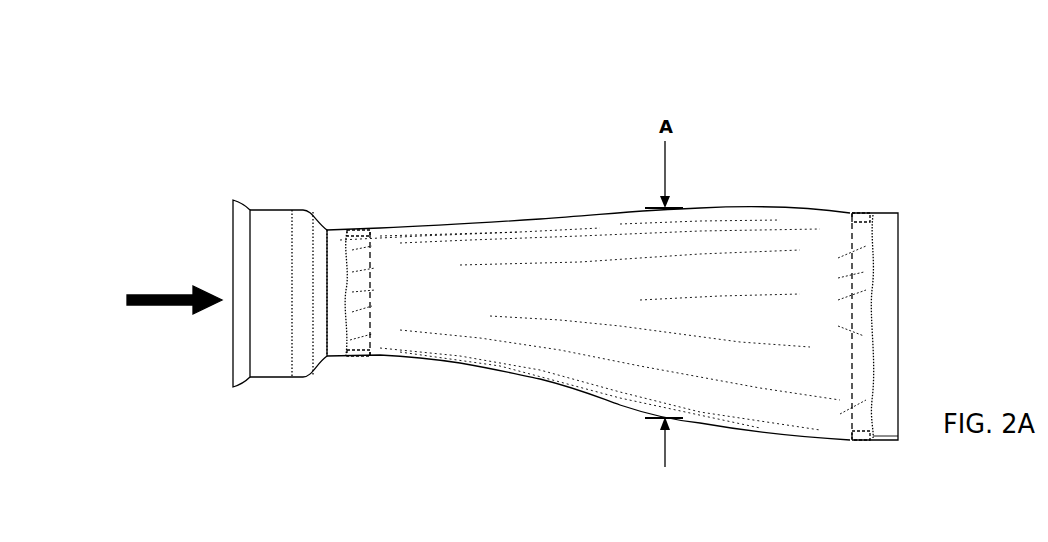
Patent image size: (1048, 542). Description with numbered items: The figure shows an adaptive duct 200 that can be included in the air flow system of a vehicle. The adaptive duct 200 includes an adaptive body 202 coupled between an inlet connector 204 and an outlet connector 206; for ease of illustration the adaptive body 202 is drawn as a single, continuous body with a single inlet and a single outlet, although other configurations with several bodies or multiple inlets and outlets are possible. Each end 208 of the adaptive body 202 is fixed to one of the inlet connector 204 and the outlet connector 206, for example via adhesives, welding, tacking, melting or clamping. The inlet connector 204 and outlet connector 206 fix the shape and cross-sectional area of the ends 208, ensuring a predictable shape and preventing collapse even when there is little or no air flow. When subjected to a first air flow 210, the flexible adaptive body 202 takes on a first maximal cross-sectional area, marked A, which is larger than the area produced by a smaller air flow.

The adaptive duct 200 is at (187, 55).
The adaptive body 202 is at (477, 293).
The inlet connector 204 is at (272, 240).
The outlet connector 206 is at (885, 238).
The end of the adaptive body 208 is at (356, 372).
The first air flow 210 is at (155, 300).